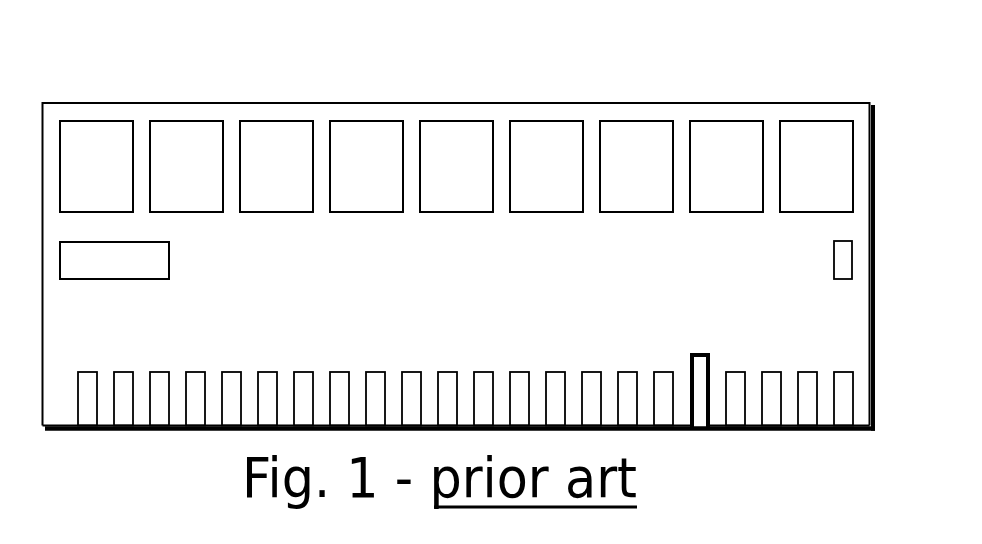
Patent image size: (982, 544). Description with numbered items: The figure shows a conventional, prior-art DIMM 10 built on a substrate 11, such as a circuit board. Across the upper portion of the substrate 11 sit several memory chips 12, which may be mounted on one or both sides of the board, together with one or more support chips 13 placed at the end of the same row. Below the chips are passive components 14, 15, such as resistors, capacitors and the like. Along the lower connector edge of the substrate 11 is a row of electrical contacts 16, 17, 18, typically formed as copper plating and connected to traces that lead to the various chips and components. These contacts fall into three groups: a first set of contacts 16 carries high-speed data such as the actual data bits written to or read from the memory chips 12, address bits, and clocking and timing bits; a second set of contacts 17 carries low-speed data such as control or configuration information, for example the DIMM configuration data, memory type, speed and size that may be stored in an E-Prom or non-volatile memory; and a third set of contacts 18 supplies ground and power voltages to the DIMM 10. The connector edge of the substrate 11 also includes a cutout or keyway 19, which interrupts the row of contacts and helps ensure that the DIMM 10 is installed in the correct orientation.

The DIMM 10 is at (706, 463).
The substrate 11 is at (366, 103).
The memory chips 12 is at (411, 166).
The support chips 13 is at (816, 166).
The passive component 14 is at (114, 260).
The passive component 15 is at (834, 254).
The first set of contacts 16 is at (127, 372).
The second set of contacts 17 is at (197, 372).
The third set of contacts 18 is at (268, 372).
The keyway 19 is at (698, 353).